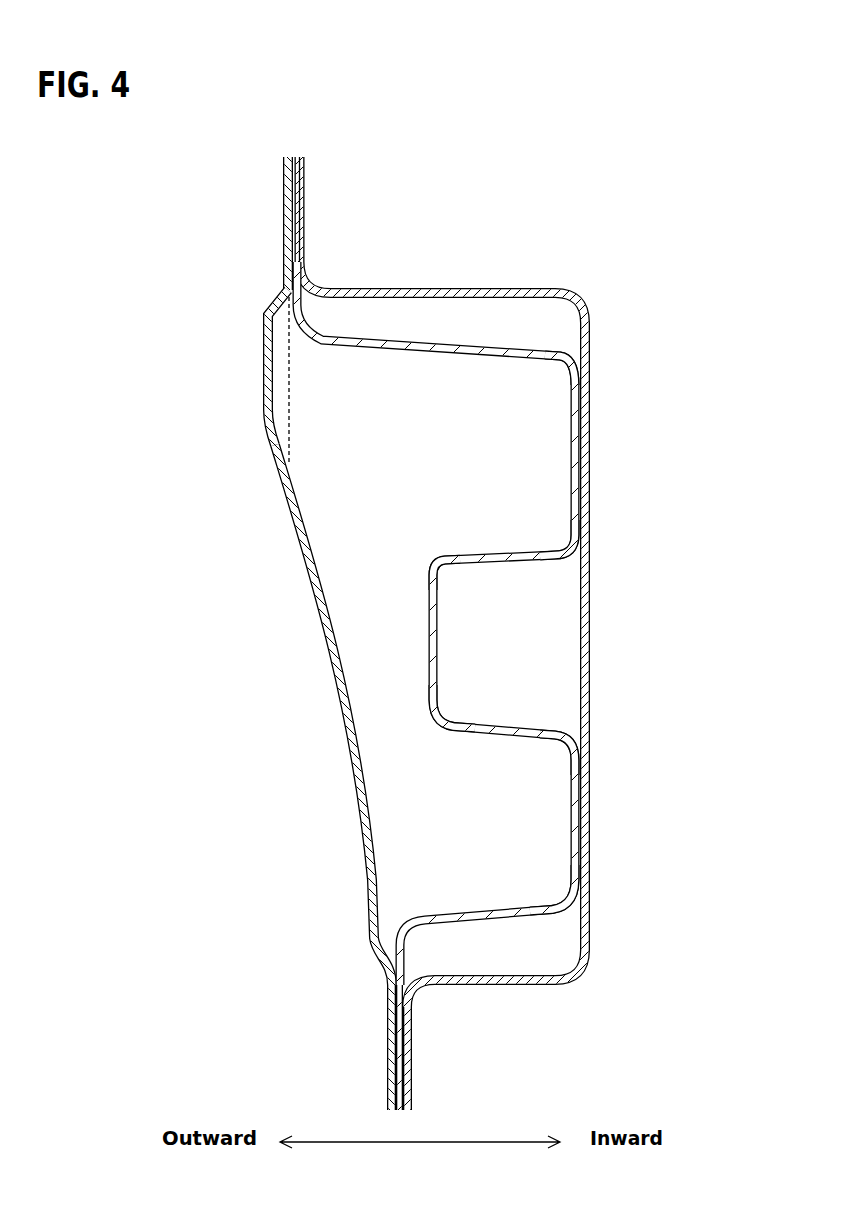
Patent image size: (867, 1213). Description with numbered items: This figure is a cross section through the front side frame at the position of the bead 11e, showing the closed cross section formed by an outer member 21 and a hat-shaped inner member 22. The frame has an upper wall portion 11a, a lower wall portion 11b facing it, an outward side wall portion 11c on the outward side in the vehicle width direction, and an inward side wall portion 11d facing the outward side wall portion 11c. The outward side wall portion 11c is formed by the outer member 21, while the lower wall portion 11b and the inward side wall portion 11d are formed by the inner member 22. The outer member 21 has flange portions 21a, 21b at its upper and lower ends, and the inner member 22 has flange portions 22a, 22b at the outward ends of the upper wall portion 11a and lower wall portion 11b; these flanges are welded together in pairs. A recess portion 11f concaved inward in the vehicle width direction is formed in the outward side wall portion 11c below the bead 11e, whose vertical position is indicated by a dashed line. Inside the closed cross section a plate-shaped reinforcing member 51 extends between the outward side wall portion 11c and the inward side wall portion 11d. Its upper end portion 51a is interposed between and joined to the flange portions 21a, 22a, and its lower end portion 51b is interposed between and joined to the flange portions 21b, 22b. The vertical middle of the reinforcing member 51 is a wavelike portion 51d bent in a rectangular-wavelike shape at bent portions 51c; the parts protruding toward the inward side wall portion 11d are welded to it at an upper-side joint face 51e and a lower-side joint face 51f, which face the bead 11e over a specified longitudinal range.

The upper wall portion 11a is at (432, 288).
The lower wall portion 11b is at (527, 986).
The outward side wall portion 11c is at (263, 398).
The inward side wall portion 11d is at (590, 640).
The bead 11e is at (289, 338).
The recess portion 11f is at (305, 565).
The outer member 21 is at (279, 633).
The flange portion 21a is at (282, 201).
The flange portion 21b is at (387, 1036).
The inner member 22 is at (495, 633).
The flange portion 22a is at (305, 201).
The flange portion 22b is at (413, 1040).
The reinforcing member 51 is at (493, 633).
The upper end portion 51a is at (300, 236).
The lower end portion 51b is at (404, 1082).
The bent portion 51c is at (586, 355).
The wavelike portion 51d is at (434, 529).
The upper-side joint face 51e is at (580, 449).
The lower-side joint face 51f is at (580, 806).